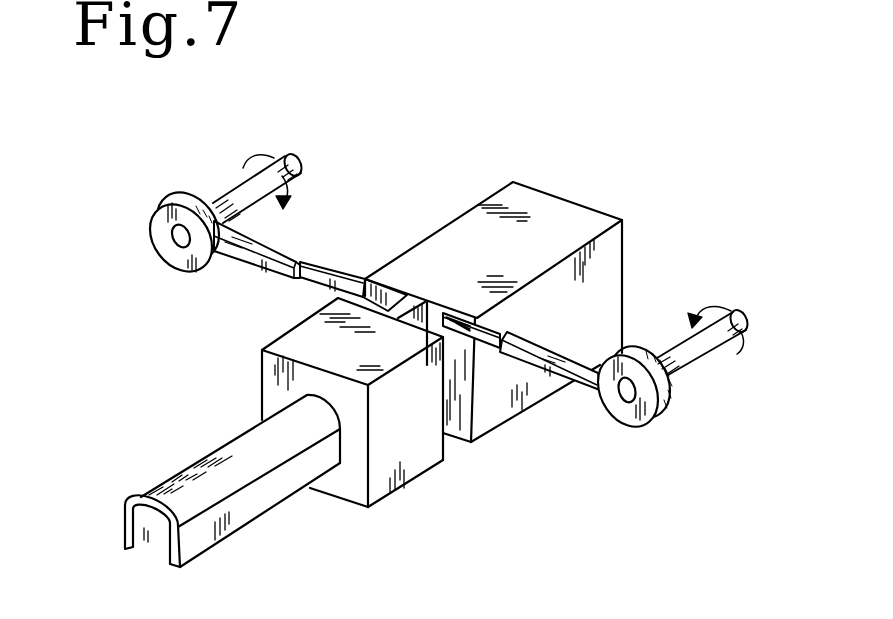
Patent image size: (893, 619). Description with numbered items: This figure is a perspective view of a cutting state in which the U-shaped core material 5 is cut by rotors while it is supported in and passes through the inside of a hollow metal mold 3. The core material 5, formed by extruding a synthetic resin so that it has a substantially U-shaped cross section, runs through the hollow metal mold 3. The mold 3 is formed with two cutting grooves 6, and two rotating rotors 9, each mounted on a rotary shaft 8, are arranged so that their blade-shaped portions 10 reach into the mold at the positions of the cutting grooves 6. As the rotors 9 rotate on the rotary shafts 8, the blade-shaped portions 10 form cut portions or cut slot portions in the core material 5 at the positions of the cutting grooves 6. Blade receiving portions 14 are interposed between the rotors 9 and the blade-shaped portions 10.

The hollow metal mold 3 is at (548, 209).
The U-shaped core material 5 is at (207, 471).
The cutting groove 6 is at (384, 294).
The rotary shaft 8 is at (233, 190).
The rotor 9 is at (171, 247).
The blade-shaped portion 10 is at (322, 266).
The blade receiving portion 14 is at (247, 255).